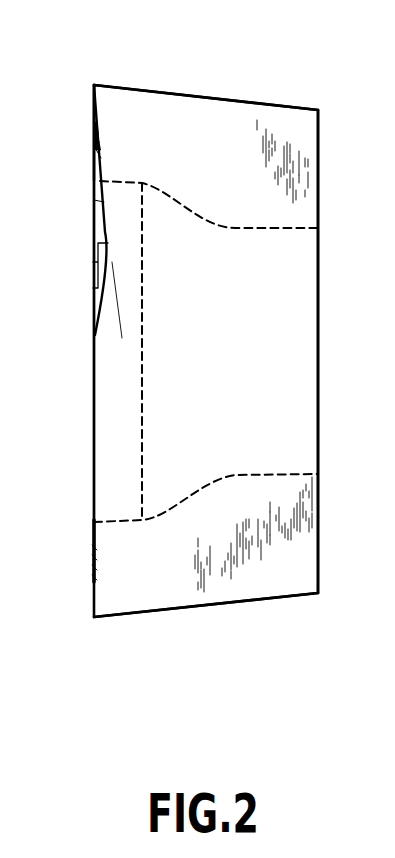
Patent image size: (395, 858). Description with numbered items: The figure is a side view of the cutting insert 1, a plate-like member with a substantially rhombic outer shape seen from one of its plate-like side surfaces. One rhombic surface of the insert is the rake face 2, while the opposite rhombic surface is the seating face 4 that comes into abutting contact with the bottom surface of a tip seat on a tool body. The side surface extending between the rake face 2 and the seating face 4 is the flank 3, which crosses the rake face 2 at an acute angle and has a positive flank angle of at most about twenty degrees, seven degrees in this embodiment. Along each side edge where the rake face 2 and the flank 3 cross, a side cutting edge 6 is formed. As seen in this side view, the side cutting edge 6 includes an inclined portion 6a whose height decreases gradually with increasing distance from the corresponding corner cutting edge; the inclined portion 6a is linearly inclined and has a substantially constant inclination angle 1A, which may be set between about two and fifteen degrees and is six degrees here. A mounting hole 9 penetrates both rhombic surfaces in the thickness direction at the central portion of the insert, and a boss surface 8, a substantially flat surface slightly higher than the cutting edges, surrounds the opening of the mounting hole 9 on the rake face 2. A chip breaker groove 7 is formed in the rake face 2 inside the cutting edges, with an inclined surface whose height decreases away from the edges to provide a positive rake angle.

The cutting insert 1 is at (300, 88).
The inclination angle 1A is at (50, 375).
The rake face 2 is at (86, 92).
The flank 3 is at (160, 89).
The seating face 4 is at (319, 170).
The side cutting edge 6 is at (100, 181).
The inclined portion 6a is at (108, 222).
The chip breaker groove 7 is at (94, 208).
The boss surface 8 is at (97, 131).
The mounting hole 9 is at (240, 238).